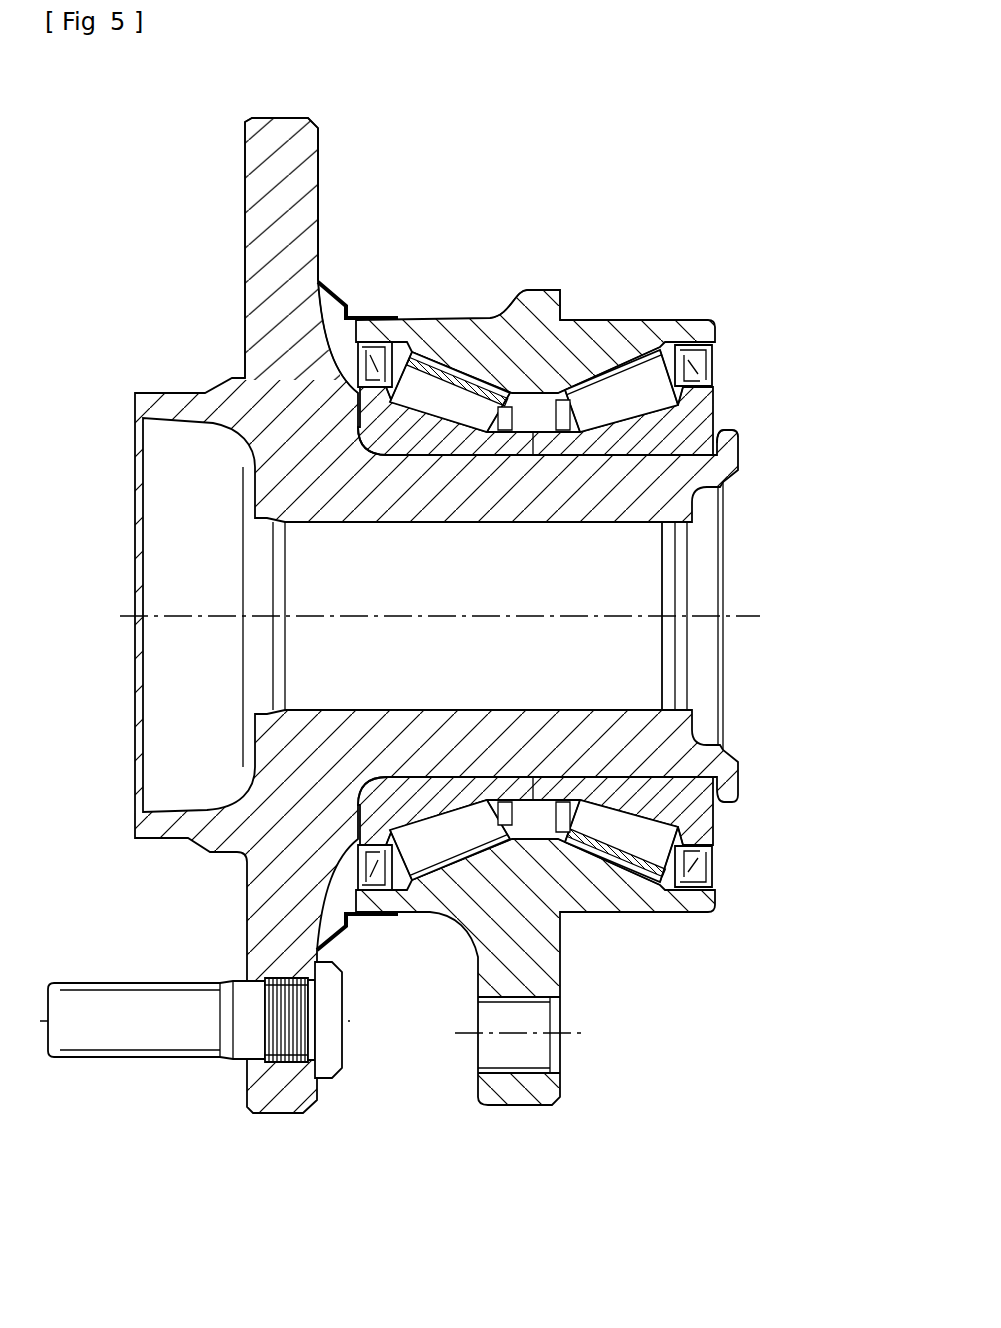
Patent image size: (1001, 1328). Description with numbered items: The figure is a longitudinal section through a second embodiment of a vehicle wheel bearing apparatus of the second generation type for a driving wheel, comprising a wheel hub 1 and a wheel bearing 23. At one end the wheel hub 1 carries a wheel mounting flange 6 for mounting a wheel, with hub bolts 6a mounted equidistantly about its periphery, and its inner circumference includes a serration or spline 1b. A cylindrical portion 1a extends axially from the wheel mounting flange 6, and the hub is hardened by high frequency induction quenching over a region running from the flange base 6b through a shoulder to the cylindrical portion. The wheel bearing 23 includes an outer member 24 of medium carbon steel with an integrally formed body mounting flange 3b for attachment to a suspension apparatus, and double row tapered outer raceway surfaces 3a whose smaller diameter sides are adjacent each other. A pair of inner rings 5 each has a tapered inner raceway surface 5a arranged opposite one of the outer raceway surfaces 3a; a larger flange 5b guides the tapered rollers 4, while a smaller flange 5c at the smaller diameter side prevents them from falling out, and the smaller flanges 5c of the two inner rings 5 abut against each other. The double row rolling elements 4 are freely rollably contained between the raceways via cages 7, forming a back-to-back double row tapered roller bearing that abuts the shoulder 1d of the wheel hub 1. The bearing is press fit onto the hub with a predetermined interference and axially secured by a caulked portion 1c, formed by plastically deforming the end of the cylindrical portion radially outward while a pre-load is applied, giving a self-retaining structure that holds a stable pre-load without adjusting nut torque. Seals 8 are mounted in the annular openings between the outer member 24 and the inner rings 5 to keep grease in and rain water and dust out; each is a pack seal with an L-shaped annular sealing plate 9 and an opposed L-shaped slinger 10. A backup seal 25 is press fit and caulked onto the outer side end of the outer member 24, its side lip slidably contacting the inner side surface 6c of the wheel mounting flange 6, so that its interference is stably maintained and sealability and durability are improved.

The wheel hub 1 is at (287, 460).
The cylindrical portion 1a is at (458, 810).
The serration 1b is at (317, 530).
The caulked portion 1c is at (733, 440).
The shoulder 1d is at (358, 462).
The outer raceway surfaces 3a is at (609, 340).
The body mounting flange 3b is at (503, 1087).
The tapered rollers 4 is at (467, 413).
The inner rings 5 is at (623, 417).
The inner raceway surface 5a is at (592, 403).
The larger flange 5b is at (638, 823).
The smaller flange 5c is at (537, 820).
The wheel mounting flange 6 is at (278, 150).
The hub bolts 6a is at (133, 1007).
The flange base 6b is at (315, 367).
The inner side surface 6c is at (315, 262).
The cages 7 is at (620, 870).
The seals 8 is at (358, 888).
The annular sealing plate 9 is at (717, 883).
The slinger 10 is at (717, 863).
The wheel bearing 23 is at (641, 286).
The outer member 24 is at (500, 330).
The backup seal 25 is at (363, 298).